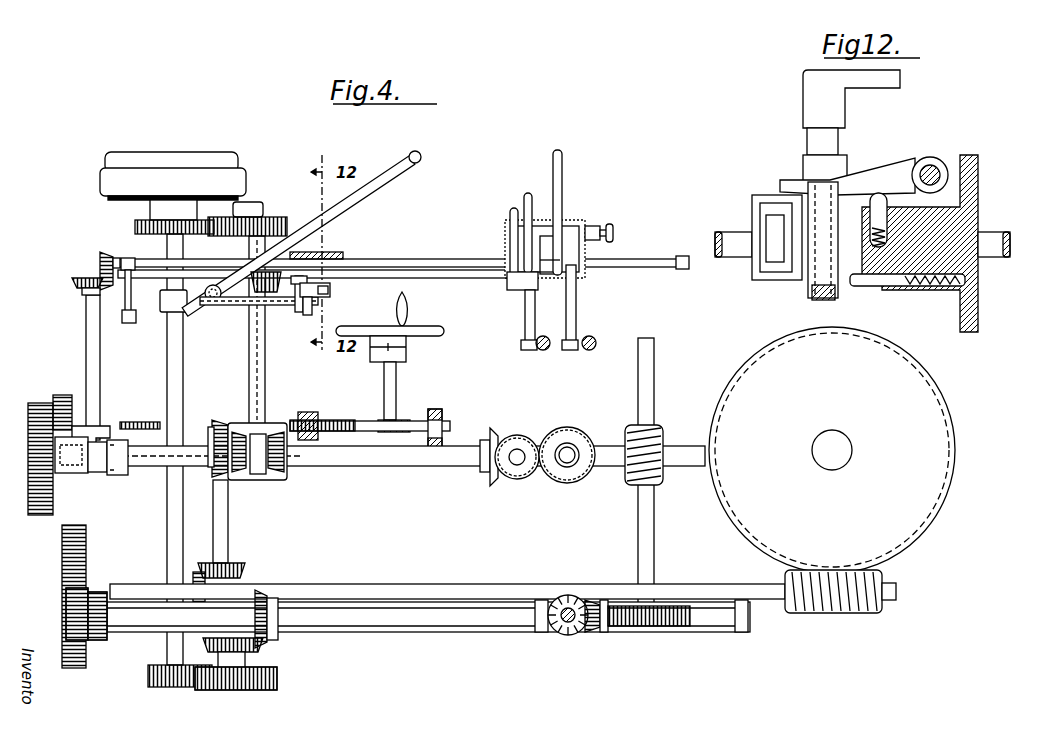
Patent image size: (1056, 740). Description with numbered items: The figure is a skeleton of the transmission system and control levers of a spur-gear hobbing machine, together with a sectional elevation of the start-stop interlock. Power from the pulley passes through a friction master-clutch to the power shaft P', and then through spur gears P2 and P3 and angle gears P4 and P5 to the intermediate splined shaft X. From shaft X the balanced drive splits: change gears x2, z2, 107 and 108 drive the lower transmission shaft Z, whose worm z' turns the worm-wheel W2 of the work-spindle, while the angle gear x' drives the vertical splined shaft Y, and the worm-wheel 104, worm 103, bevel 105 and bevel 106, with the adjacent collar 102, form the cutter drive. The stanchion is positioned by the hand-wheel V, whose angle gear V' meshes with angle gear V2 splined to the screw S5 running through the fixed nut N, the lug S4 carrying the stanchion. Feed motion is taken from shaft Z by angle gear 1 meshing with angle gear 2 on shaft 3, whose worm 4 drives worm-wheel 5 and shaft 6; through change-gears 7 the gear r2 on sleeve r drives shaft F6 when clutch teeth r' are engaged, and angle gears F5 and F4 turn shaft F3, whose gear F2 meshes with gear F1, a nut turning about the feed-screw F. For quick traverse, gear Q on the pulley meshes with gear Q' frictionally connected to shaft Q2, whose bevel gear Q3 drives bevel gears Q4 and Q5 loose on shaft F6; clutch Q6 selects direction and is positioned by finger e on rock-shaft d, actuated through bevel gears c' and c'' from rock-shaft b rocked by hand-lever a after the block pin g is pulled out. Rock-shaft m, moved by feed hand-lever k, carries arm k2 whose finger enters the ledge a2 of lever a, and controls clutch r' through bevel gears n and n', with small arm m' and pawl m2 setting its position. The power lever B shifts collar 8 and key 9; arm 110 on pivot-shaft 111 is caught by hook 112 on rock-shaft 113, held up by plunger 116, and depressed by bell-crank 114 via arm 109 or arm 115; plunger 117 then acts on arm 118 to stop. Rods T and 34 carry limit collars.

In FIG. 4, the gear Q is at (157, 227).
In FIG. 4, the gear Q' is at (257, 216).
In FIG. 4, the power shaft P' is at (156, 449).
In FIG. 12, the power shaft P' is at (859, 263).
In FIG. 4, the long key 9 is at (183, 248).
In FIG. 4, the bevel gear n is at (98, 264).
In FIG. 4, the bevel gear n' is at (74, 278).
In FIG. 4, the rock-shaft m is at (403, 253).
In FIG. 4, the small arm m' is at (139, 285).
In FIG. 4, the oscillatable pawl m2 is at (128, 323).
In FIG. 4, the collar 8 is at (187, 312).
In FIG. 12, the collar 8 is at (758, 212).
In FIG. 4, the shaft Q2 is at (249, 353).
In FIG. 4, the rock-shaft d is at (265, 353).
In FIG. 4, the power lever B is at (356, 194).
In FIG. 12, the power lever B is at (885, 88).
In FIG. 4, the bevel gear c' is at (257, 279).
In FIG. 4, the bevel gear c'' is at (301, 262).
In FIG. 4, the rock-shaft 113 is at (440, 279).
In FIG. 12, the rock-shaft 113 is at (935, 166).
In FIG. 4, the spring-pressed plunger 117 is at (330, 289).
In FIG. 12, the spring-pressed plunger 117 is at (855, 282).
In FIG. 4, the arm 118 is at (320, 300).
In FIG. 12, the arm 118 is at (820, 288).
In FIG. 4, the arm 110 is at (312, 310).
In FIG. 12, the arm 110 is at (822, 165).
In FIG. 4, the depressible hook 112 is at (300, 306).
In FIG. 12, the depressible hook 112 is at (793, 182).
In FIG. 4, the hand-wheel V is at (399, 327).
In FIG. 4, the angle gear V' is at (376, 397).
In FIG. 4, the angle gear V2 is at (389, 440).
In FIG. 4, the fixed nut N is at (370, 414).
In FIG. 4, the screw S5 is at (414, 420).
In FIG. 4, the lug S4 is at (443, 414).
In FIG. 4, the feed hand-lever k is at (524, 205).
In FIG. 4, the ledge a2 is at (546, 232).
In FIG. 4, the hand-lever a is at (570, 212).
In FIG. 4, the block pin g is at (572, 235).
In FIG. 4, the lever 109 is at (510, 216).
In FIG. 4, the arm k2 is at (525, 258).
In FIG. 4, the bell-crank lever 114 is at (515, 290).
In FIG. 4, the arm 115 is at (525, 328).
In FIG. 4, the feed shift-rod 34 is at (540, 349).
In FIG. 4, the arm a' is at (582, 307).
In FIG. 4, the rock-shaft b is at (588, 268).
In FIG. 4, the rod T is at (594, 338).
In FIG. 4, the change-gears 7 is at (30, 406).
In FIG. 4, the sleeve r is at (84, 473).
In FIG. 4, the clutch teeth r' is at (117, 472).
In FIG. 4, the gear r2 is at (28, 500).
In FIG. 4, the shaft F6 is at (158, 470).
In FIG. 4, the worm 4 is at (210, 425).
In FIG. 4, the worm-wheel 5 is at (221, 420).
In FIG. 4, the shaft 6 is at (209, 440).
In FIG. 4, the bevel gear Q3 is at (283, 424).
In FIG. 4, the bevel gear Q4 is at (231, 481).
In FIG. 4, the bevel gear Q5 is at (286, 480).
In FIG. 4, the clutch Q6 is at (239, 479).
In FIG. 4, the finger e is at (263, 481).
In FIG. 4, the shaft 3 is at (228, 545).
In FIG. 4, the angle gear 1 is at (196, 578).
In FIG. 4, the angle gear 2 is at (243, 573).
In FIG. 4, the angle gear P5 is at (268, 598).
In FIG. 4, the transmission shaft Z is at (418, 584).
In FIG. 4, the intermediate splined shaft X is at (426, 633).
In FIG. 4, the change gear z2 is at (62, 555).
In FIG. 4, the change gear 108 is at (84, 600).
In FIG. 4, the change gear 107 is at (107, 600).
In FIG. 4, the change gear x2 is at (107, 632).
In FIG. 4, the angle gear P4 is at (265, 650).
In FIG. 4, the spur gear P2 is at (178, 688).
In FIG. 4, the feed-screw F is at (568, 468).
In FIG. 4, the gear F1 is at (592, 432).
In FIG. 4, the gear F2 is at (540, 438).
In FIG. 4, the shaft F3 is at (517, 448).
In FIG. 4, the angle gear F4 is at (521, 479).
In FIG. 4, the angle gear F5 is at (493, 486).
In FIG. 4, the worm C is at (662, 430).
In FIG. 4, the shaft c is at (656, 470).
In FIG. 4, the bevel 106 is at (558, 596).
In FIG. 4, the bevel 105 is at (589, 600).
In FIG. 4, the worm-wheel 104 is at (665, 608).
In FIG. 4, the collar 102 is at (692, 606).
In FIG. 4, the worm 103 is at (660, 630).
In FIG. 4, the angle gear x' is at (530, 645).
In FIG. 4, the transmission shaft Y is at (573, 636).
In FIG. 4, the worm-wheel W2 is at (960, 526).
In FIG. 4, the worm z' is at (840, 605).
In FIG. 12, the pivot-shaft 111 is at (815, 136).
In FIG. 12, the spring-pressed plunger 116 is at (885, 195).